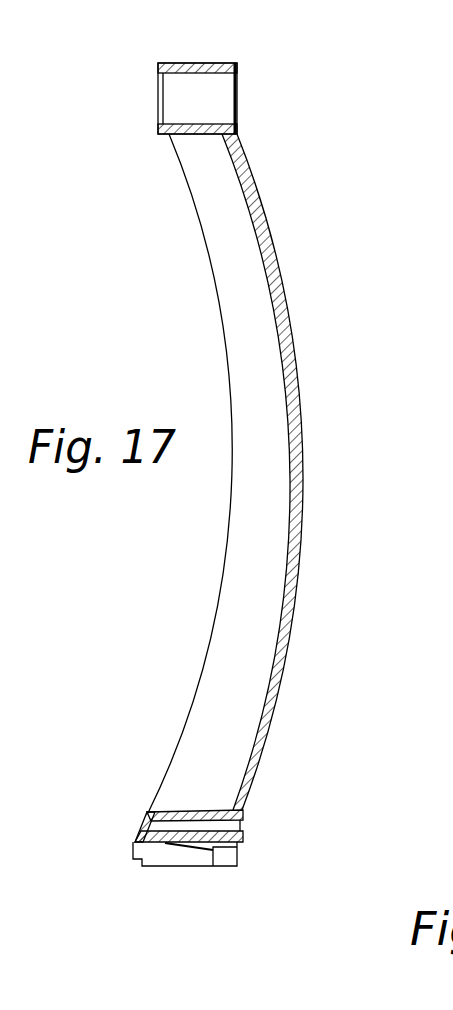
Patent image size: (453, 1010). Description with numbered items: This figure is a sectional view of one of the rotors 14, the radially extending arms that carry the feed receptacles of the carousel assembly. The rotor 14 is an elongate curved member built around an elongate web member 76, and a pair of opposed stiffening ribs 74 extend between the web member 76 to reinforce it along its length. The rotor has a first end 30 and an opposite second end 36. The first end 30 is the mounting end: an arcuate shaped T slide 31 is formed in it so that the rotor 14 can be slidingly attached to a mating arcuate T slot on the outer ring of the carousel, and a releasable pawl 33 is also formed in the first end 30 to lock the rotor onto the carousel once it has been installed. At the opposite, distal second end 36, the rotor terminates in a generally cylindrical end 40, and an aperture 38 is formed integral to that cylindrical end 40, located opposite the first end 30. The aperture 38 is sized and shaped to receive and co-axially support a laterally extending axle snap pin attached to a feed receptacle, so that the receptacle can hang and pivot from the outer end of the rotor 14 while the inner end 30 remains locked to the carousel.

The rotor 14 is at (240, 486).
The first end 30 is at (186, 886).
The T slide 31 is at (126, 806).
The releasable pawl 33 is at (222, 851).
The second end 36 is at (288, 200).
The aperture 38 is at (158, 95).
The cylindrical end 40 is at (212, 62).
The stiffening ribs 74 is at (220, 648).
The elongate web member 76 is at (302, 570).